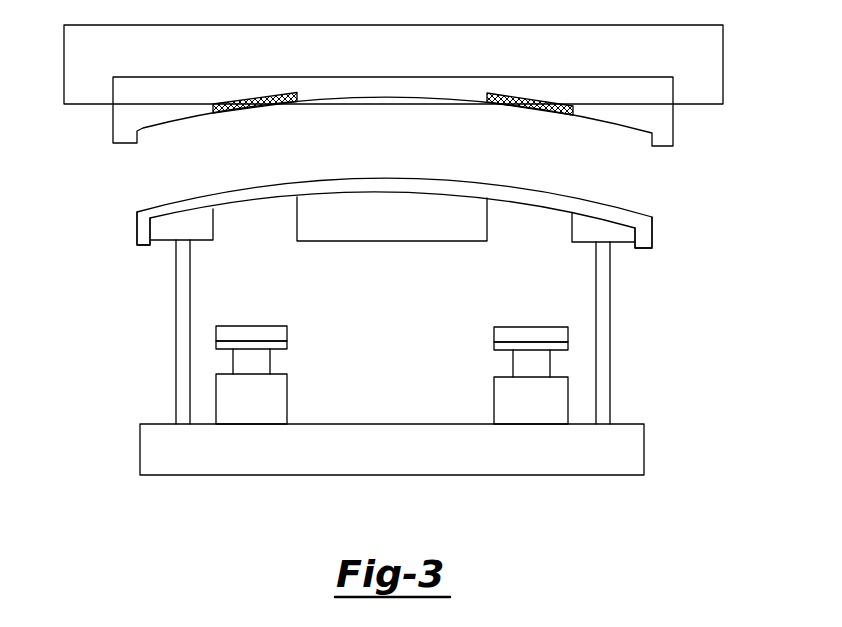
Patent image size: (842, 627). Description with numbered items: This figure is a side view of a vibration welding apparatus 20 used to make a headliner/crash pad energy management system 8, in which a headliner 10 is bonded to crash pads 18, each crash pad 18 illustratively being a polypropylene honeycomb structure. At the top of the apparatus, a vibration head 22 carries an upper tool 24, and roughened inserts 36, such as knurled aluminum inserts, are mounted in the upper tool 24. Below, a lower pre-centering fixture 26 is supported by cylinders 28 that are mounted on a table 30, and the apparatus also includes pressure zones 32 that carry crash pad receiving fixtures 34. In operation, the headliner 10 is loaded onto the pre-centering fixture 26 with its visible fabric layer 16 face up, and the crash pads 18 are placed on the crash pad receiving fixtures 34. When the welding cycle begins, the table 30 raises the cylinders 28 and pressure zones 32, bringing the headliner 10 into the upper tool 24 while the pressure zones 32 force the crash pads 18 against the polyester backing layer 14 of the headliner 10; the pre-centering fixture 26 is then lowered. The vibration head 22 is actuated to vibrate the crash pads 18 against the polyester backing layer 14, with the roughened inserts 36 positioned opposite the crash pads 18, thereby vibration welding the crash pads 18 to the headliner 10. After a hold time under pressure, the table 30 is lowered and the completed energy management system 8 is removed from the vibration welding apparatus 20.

The headliner/crash pad energy management system 8 is at (141, 180).
The headliner 10 is at (657, 244).
The polyester backing layer 14 is at (258, 203).
The fabric layer 16 is at (612, 204).
The crash pad 18 is at (287, 331).
The vibration welding apparatus 20 is at (710, 193).
The vibration head 22 is at (723, 60).
The upper tool 24 is at (673, 137).
The pre-centering fixture 26 is at (137, 231).
The cylinders 28 is at (176, 312).
The table 30 is at (644, 458).
The pressure zones 32 is at (288, 397).
The crash pad receiving fixtures 34 is at (288, 345).
The roughened inserts 36 is at (258, 108).